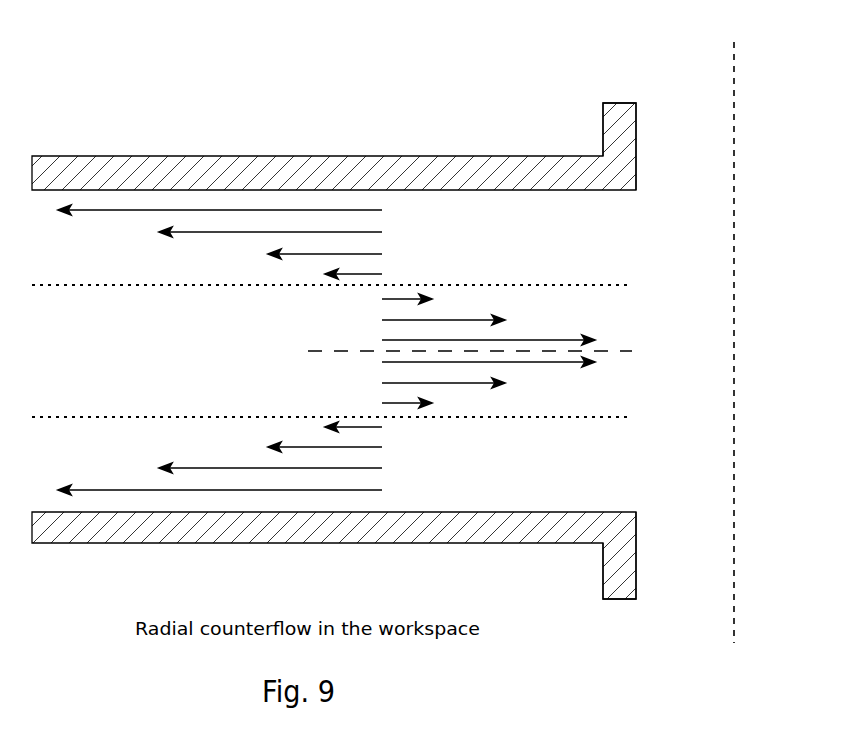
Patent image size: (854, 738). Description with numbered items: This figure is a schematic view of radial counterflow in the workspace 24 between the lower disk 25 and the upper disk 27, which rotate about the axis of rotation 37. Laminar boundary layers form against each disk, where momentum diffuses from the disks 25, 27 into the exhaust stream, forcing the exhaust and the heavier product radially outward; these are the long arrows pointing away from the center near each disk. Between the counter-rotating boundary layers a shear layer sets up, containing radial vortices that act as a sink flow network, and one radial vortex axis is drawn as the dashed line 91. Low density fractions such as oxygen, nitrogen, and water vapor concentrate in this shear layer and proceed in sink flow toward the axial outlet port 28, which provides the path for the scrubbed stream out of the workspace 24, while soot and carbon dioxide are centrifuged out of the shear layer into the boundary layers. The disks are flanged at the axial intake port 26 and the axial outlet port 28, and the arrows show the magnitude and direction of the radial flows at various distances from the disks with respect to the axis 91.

The workspace 24 is at (322, 350).
The lower disk 25 is at (334, 555).
The axial intake port 26 is at (653, 555).
The upper disk 27 is at (334, 146).
The axial outlet port 28 is at (649, 146).
The axis of rotation 37 is at (734, 345).
The radial vortex axis 91 is at (456, 350).